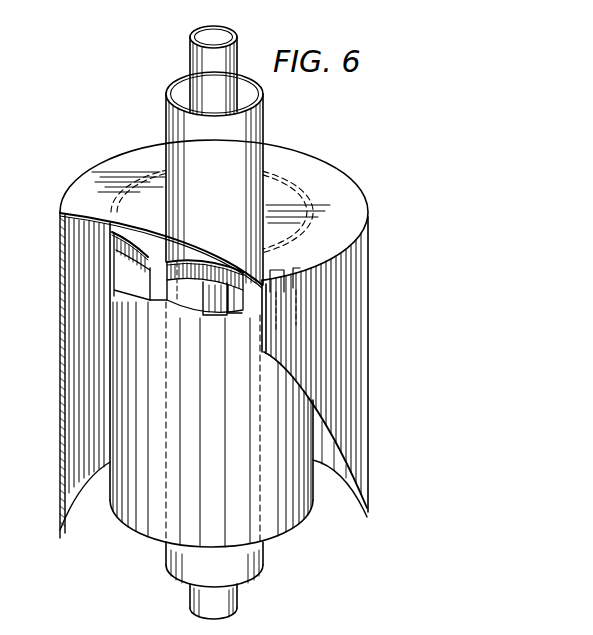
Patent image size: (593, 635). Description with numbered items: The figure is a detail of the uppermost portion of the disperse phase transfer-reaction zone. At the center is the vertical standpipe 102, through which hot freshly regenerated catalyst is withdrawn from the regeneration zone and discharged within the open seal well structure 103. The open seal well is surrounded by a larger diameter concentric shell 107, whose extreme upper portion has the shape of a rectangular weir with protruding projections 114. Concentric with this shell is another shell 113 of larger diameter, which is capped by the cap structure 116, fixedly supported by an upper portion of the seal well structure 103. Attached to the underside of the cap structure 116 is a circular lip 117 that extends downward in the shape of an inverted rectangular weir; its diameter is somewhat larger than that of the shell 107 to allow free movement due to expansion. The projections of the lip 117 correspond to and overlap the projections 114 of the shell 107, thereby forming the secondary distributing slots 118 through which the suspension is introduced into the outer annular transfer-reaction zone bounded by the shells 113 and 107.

The standpipe 102 is at (190, 53).
The open seal well structure 103 is at (166, 117).
The shell 107 is at (117, 328).
The shell 113 is at (62, 538).
The protruding projections 114 is at (158, 293).
The cap structure 116 is at (124, 155).
The circular lip 117 is at (123, 249).
The secondary distributing slots 118 is at (253, 302).